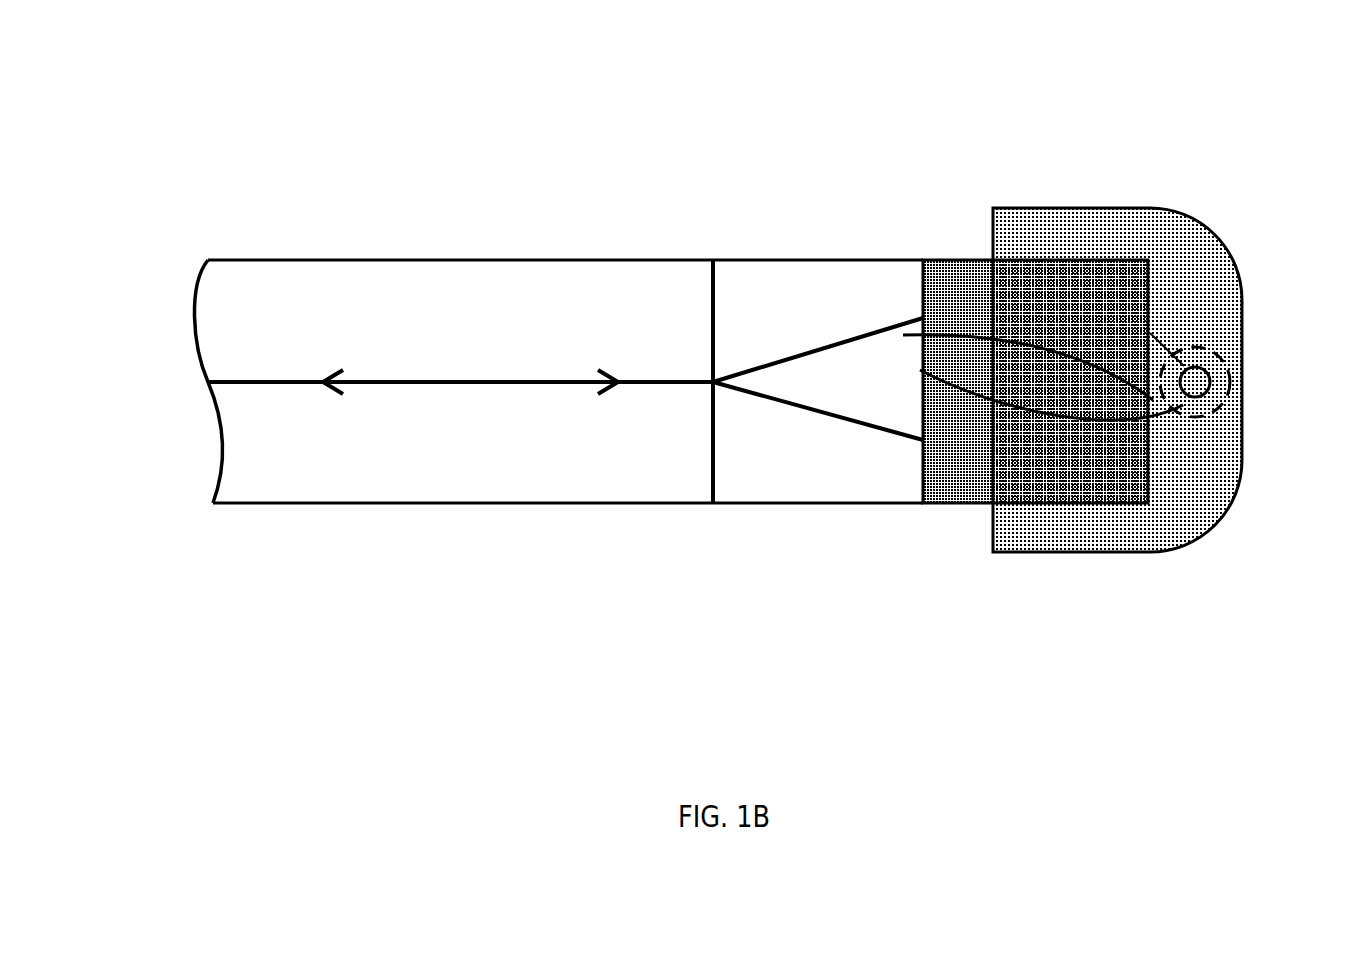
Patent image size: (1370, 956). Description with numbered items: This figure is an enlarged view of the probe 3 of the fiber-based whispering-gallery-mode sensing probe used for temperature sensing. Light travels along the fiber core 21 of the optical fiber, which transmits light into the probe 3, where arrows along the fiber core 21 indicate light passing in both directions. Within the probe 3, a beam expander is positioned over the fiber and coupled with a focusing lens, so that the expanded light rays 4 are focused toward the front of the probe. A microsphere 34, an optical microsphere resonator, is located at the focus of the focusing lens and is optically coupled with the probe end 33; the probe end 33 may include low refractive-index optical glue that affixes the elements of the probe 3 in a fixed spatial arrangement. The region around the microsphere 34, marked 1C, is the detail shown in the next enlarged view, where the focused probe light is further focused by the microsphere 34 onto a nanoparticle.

The probe 3 is at (297, 168).
The fiber core 21 is at (470, 382).
The probe end 33 is at (1088, 532).
The microsphere 34 is at (1197, 385).
The light rays 4 is at (863, 423).
The detail region of FIG. 1C is at (1240, 378).